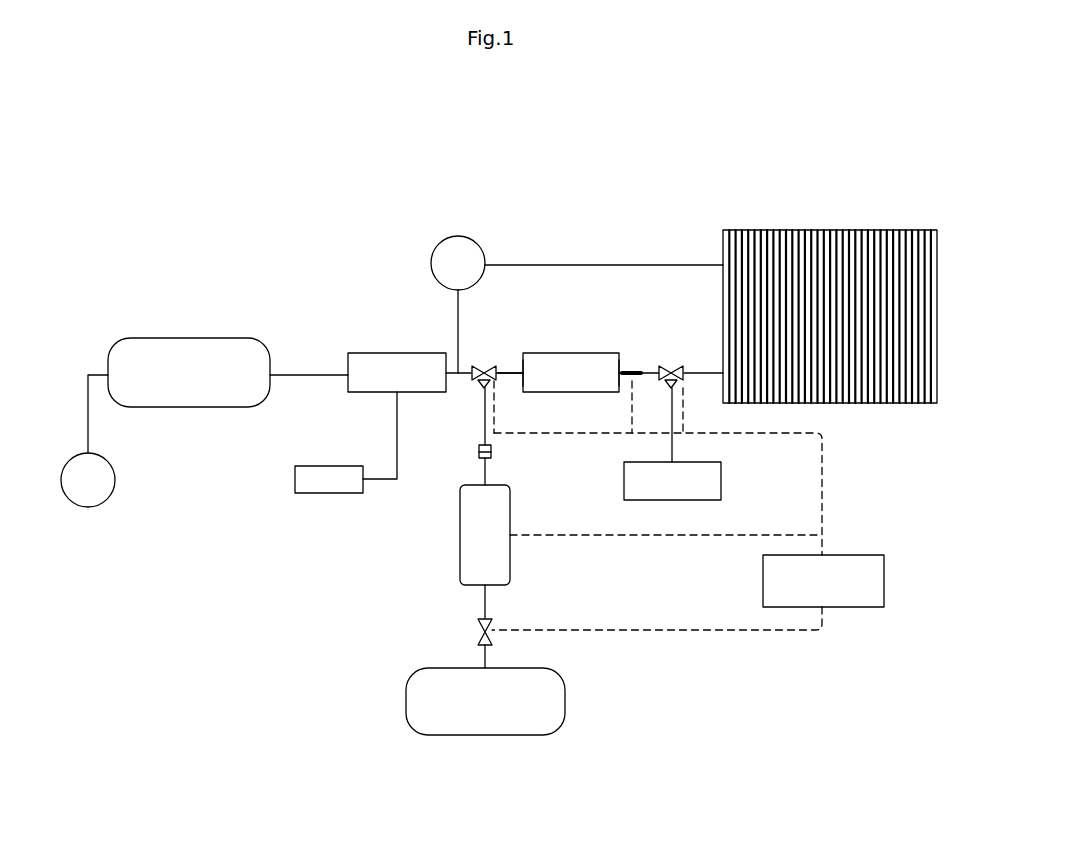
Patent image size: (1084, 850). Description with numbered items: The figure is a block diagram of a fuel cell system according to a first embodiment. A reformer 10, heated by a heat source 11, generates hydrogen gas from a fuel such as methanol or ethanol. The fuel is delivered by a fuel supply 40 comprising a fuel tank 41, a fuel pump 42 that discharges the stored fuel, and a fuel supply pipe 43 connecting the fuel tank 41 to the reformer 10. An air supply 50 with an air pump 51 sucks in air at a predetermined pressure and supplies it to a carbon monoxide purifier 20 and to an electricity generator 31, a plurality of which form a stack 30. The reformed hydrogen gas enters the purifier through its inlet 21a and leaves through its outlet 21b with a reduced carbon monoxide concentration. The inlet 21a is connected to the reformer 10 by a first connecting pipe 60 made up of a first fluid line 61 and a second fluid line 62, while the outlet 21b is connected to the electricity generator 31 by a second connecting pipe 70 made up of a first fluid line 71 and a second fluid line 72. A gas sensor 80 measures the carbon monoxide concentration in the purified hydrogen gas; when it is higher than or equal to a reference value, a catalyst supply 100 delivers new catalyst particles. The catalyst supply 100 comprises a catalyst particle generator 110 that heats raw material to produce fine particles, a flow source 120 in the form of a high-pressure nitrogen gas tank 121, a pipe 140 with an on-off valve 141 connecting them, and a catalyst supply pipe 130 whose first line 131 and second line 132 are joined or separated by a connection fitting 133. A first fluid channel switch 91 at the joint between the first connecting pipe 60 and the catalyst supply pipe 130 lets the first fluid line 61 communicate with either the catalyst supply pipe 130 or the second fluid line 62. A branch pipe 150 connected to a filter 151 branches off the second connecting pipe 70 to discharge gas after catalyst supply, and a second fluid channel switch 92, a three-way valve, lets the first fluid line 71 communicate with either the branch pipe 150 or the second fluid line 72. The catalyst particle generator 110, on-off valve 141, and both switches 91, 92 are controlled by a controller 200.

The catalyst supply 100 is at (385, 608).
The reformer 10 is at (388, 360).
The heat source 11 is at (312, 496).
The catalyst supply pipe 130 is at (397, 447).
The fuel supply 40 is at (122, 332).
The fuel tank 41 is at (181, 345).
The fuel pump 42 is at (100, 502).
The fuel supply pipe 43 is at (298, 370).
The air supply 50 is at (475, 238).
The air pump 51 is at (440, 248).
The first connecting pipe 60 is at (522, 324).
The first fluid line 61 is at (514, 368).
The second fluid line 62 is at (480, 365).
The carbon monoxide purifier 20 is at (572, 362).
The inlet 21a is at (528, 386).
The outlet 21b is at (619, 386).
The gas sensor 80 is at (630, 366).
The second connecting pipe 70 is at (692, 326).
The first fluid line 71 is at (653, 366).
The second fluid line 72 is at (697, 368).
The stack 30 is at (788, 226).
The electricity generator 31 is at (862, 236).
The first fluid channel switch 91 is at (484, 382).
The second fluid channel switch 92 is at (666, 388).
The second line 132 is at (484, 427).
The connection fitting 133 is at (493, 456).
The first line 131 is at (484, 471).
The catalyst particle generator 110 is at (455, 512).
The pipe 140 is at (488, 600).
The on-off valve 141 is at (491, 636).
The flow source 120 is at (422, 742).
The gas tank 121 is at (524, 728).
The branch pipe 150 is at (674, 443).
The filter 151 is at (722, 487).
The controller 200 is at (862, 548).